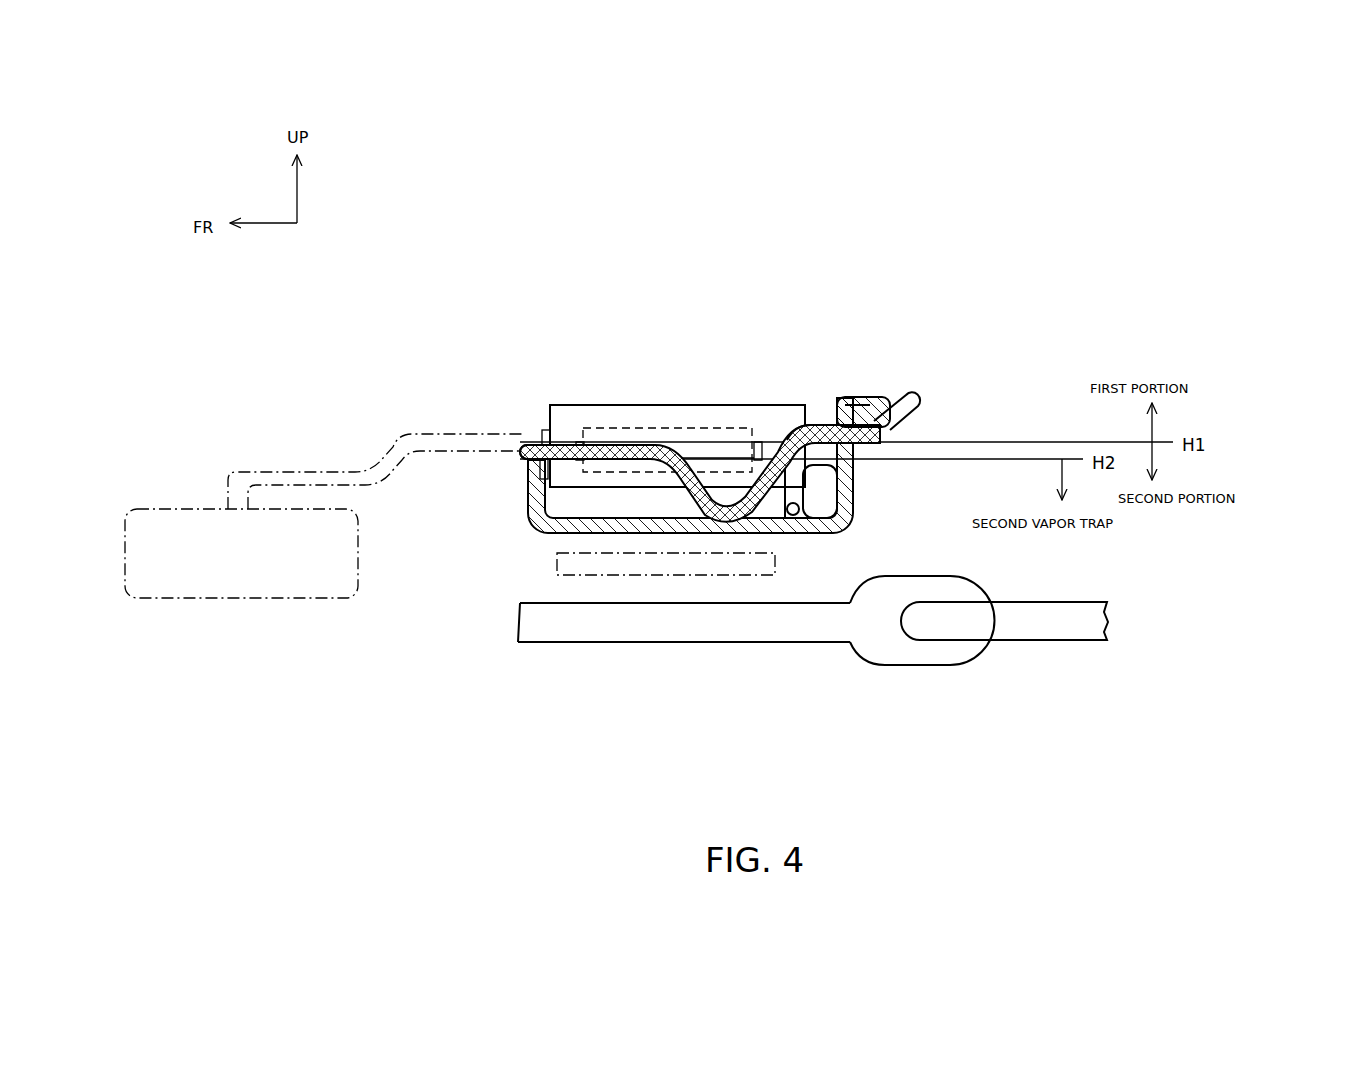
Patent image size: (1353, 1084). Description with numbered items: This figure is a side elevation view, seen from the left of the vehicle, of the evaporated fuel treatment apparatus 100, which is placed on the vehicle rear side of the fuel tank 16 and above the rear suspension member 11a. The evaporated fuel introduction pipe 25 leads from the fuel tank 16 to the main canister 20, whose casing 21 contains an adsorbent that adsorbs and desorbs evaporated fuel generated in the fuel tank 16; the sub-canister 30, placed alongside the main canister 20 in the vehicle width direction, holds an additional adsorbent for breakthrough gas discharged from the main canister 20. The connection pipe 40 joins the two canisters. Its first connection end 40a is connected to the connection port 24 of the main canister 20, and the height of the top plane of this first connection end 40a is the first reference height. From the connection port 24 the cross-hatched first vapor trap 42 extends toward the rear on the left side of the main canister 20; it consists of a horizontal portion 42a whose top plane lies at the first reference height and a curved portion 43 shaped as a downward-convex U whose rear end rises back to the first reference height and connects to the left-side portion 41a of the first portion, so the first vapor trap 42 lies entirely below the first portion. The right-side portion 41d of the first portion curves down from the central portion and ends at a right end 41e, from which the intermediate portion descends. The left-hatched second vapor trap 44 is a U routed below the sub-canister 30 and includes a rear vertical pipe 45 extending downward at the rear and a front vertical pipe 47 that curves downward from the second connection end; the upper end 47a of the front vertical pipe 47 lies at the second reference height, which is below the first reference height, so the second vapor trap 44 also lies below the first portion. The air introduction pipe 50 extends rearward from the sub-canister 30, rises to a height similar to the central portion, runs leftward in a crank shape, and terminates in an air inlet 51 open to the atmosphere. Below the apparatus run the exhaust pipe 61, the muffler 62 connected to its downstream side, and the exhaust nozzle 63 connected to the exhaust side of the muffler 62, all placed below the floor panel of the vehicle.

The evaporated fuel treatment apparatus 100 is at (1010, 215).
The fuel tank 16 is at (172, 505).
The evaporated fuel introduction pipe 25 is at (303, 473).
The main canister 20 is at (572, 403).
The casing 21 is at (610, 405).
The sub-canister 30 is at (657, 427).
The connection port 24 is at (545, 432).
The connection pipe 40 is at (523, 440).
The first connection end 40a is at (533, 443).
The left-side portion 41a is at (825, 423).
The right-side portion 41d is at (842, 400).
The right end 41e is at (922, 437).
The air introduction pipe 50 is at (872, 397).
The first vapor trap 42 is at (600, 465).
The horizontal portion 42a is at (565, 528).
The curved portion 43 is at (722, 522).
The second vapor trap 44 is at (630, 540).
The rear vertical pipe 45 is at (843, 533).
The front vertical pipe 47 is at (540, 516).
The upper end 47a is at (510, 468).
The air inlet 51 is at (800, 520).
The exhaust pipe 61 is at (748, 643).
The rear suspension member 11a is at (795, 615).
The muffler 62 is at (922, 667).
The exhaust nozzle 63 is at (1045, 642).